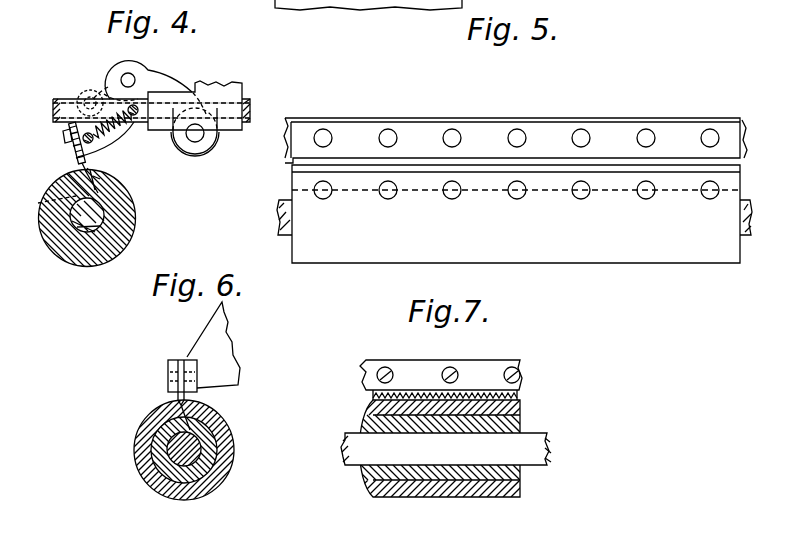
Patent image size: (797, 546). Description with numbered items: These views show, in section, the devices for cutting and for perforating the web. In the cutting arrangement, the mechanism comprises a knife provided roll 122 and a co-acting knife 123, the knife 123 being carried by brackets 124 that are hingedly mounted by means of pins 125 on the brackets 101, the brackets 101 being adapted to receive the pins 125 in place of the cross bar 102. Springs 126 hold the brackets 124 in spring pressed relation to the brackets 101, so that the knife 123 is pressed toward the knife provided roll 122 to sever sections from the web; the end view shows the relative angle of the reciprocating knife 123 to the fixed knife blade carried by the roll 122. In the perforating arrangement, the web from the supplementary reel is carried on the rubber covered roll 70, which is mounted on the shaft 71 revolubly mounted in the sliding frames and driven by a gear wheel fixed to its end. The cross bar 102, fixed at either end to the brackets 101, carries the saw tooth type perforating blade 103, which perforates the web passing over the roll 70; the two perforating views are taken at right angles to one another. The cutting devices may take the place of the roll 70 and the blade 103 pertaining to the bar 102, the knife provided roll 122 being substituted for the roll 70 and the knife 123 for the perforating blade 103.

In FIG. 4, the brackets 101 is at (158, 89).
In FIG. 4, the pins 125 is at (88, 101).
In FIG. 4, the springs 126 is at (128, 131).
In FIG. 4, the brackets 124 is at (110, 147).
In FIG. 4, the co-acting knife 123 is at (72, 153).
In FIG. 5, the co-acting knife 123 is at (295, 155).
In FIG. 4, the knife provided roll 122 is at (132, 233).
In FIG. 5, the knife provided roll 122 is at (514, 214).
In FIG. 6, the cross bar 102 is at (172, 362).
In FIG. 7, the cross bar 102 is at (370, 368).
In FIG. 6, the perforating blade 103 is at (188, 398).
In FIG. 7, the perforating blade 103 is at (518, 396).
In FIG. 6, the roll 70 is at (217, 472).
In FIG. 7, the roll 70 is at (520, 486).
In FIG. 6, the shaft 71 is at (170, 465).
In FIG. 7, the shaft 71 is at (355, 455).